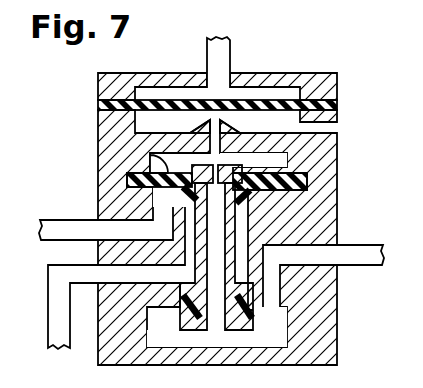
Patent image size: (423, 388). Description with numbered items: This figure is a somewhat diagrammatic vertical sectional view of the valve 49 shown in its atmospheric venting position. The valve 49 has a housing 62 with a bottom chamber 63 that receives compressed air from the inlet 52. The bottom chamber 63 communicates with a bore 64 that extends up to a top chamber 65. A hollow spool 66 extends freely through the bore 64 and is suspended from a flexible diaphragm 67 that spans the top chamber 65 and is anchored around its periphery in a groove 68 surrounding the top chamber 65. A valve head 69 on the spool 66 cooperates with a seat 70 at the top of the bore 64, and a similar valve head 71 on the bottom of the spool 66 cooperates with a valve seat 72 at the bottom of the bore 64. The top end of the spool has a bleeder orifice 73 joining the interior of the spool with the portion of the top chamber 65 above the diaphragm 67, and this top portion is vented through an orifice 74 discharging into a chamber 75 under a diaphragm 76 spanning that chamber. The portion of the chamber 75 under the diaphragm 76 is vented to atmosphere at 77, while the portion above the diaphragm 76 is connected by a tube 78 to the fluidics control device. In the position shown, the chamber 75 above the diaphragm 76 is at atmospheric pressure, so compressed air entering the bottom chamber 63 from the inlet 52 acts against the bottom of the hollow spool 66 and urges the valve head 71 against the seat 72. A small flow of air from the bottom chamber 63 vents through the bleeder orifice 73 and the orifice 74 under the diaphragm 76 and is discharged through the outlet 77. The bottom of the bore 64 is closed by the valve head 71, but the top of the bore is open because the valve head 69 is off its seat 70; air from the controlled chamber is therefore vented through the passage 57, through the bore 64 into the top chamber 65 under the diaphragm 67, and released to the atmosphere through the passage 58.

The valve 49 is at (339, 72).
The inlet 52 is at (358, 245).
The passage 57 is at (48, 307).
The passage 58 is at (60, 224).
The housing 62 is at (338, 198).
The bottom chamber 63 is at (280, 332).
The bore 64 is at (248, 277).
The top chamber 65 is at (276, 160).
The hollow spool 66 is at (236, 238).
The flexible diaphragm 67 is at (150, 153).
The groove 68 is at (130, 180).
The valve head 69 is at (250, 200).
The seat 70 is at (182, 208).
The valve head 71 is at (195, 320).
The valve seat 72 is at (185, 300).
The bleeder orifice 73 is at (200, 232).
The orifice 74 is at (224, 124).
The chamber 75 is at (282, 120).
The diaphragm 76 is at (165, 104).
The atmospheric vent 77 is at (333, 128).
The tube 78 is at (226, 56).